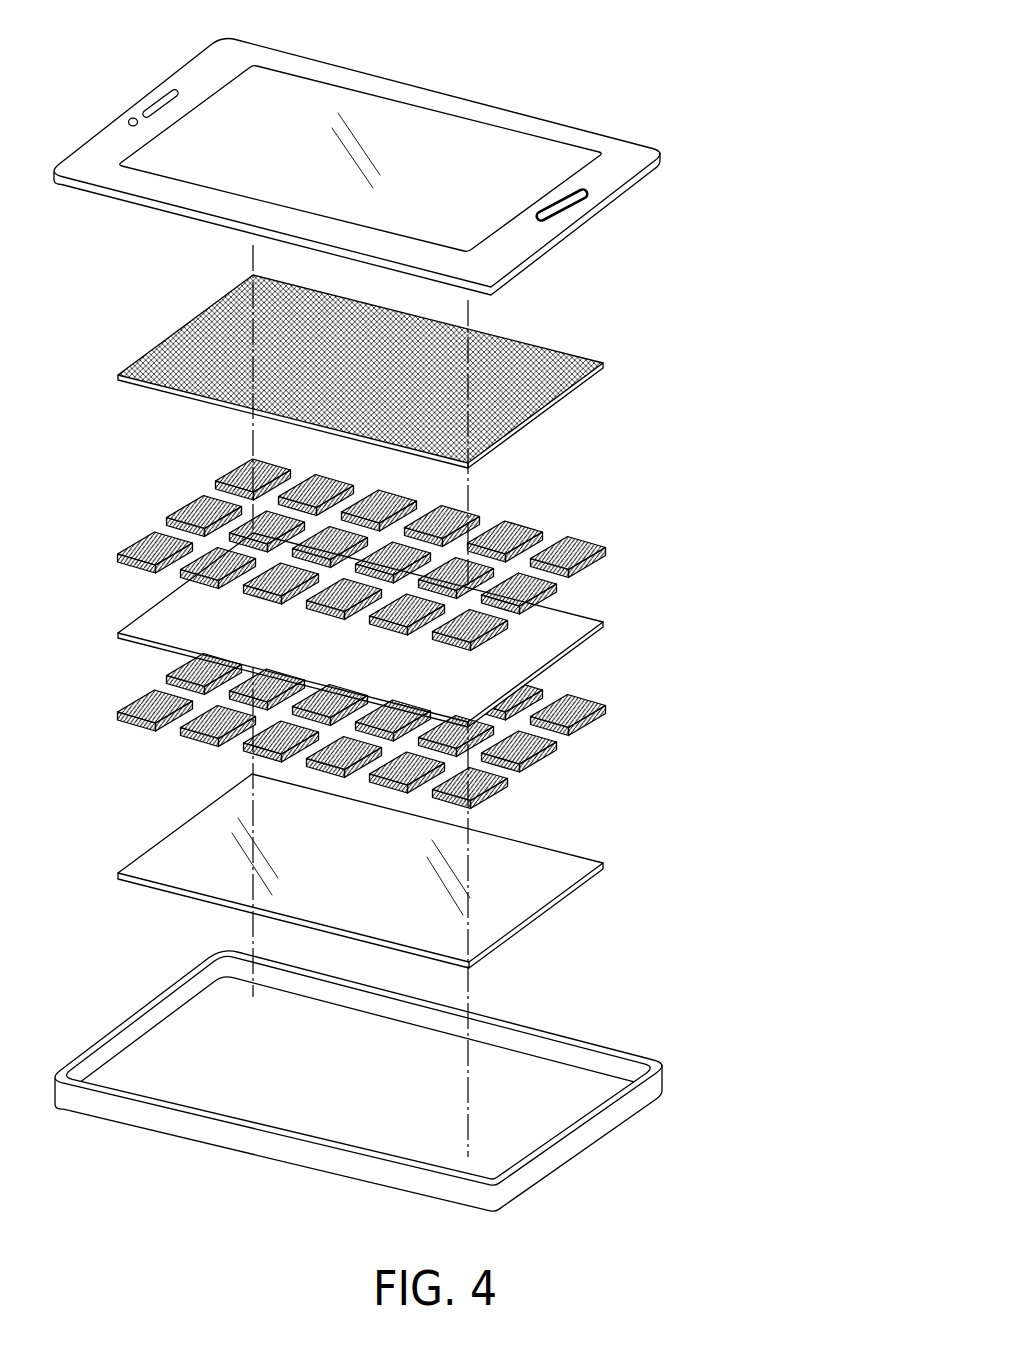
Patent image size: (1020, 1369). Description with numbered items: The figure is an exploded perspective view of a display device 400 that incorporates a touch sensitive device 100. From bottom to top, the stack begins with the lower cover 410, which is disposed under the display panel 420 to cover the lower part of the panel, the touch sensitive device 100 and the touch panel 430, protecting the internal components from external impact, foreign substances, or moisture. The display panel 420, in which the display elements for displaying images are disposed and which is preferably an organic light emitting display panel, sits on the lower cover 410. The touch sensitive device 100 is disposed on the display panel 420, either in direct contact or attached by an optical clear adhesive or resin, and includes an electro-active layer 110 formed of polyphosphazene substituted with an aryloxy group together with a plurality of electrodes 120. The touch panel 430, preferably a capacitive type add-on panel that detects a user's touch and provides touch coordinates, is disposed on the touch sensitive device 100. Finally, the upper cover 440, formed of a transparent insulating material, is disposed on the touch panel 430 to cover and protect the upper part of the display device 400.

The display device 400 is at (670, 36).
The upper cover 440 is at (613, 137).
The touch panel 430 is at (603, 362).
The electrodes 120 is at (523, 517).
The electro-active layer 110 is at (570, 610).
The touch sensitive device 100 is at (768, 533).
The display panel 420 is at (603, 863).
The lower cover 410 is at (580, 1037).